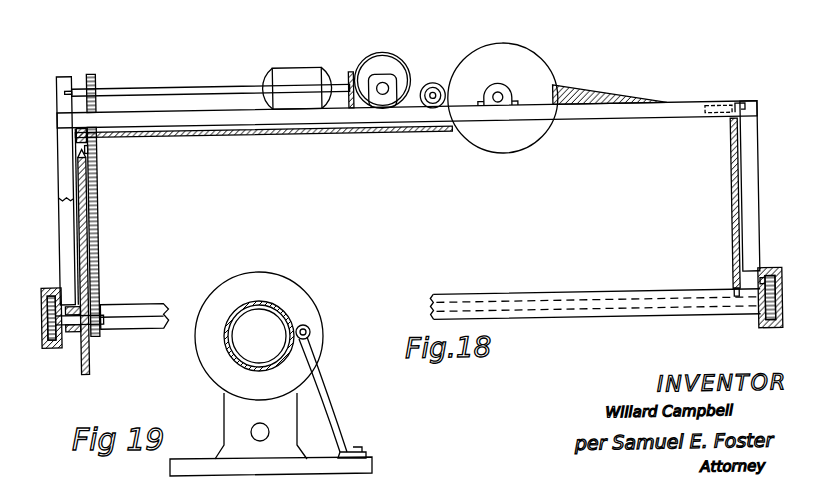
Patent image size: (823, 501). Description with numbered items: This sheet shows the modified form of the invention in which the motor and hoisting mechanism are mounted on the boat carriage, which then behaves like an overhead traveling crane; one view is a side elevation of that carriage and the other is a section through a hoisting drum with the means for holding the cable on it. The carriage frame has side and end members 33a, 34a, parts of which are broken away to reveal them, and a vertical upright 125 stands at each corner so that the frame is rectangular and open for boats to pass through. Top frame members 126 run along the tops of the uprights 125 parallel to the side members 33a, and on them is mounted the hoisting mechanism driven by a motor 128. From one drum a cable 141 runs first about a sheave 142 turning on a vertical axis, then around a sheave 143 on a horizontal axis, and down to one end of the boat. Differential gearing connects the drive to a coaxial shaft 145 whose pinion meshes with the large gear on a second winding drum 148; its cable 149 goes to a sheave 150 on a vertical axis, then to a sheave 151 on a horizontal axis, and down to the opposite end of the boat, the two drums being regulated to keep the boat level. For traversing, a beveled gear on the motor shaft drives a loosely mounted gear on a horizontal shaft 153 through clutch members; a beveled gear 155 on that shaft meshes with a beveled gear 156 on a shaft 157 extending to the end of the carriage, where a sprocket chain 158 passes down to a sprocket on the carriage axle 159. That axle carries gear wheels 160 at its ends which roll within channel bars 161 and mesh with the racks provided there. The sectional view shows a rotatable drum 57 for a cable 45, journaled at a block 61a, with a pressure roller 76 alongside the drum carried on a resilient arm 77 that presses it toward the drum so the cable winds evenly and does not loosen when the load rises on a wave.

In FIG. 18, the vertical upright 125 is at (67, 168).
In FIG. 18, the top frame member 126 is at (610, 118).
In FIG. 18, the motor 128 is at (285, 87).
In FIG. 18, the cable 141 is at (585, 99).
In FIG. 18, the sheave 142 is at (720, 115).
In FIG. 18, the sheave 143 is at (727, 138).
In FIG. 18, the coaxial shaft 145 is at (443, 99).
In FIG. 18, the second winding drum 148 is at (525, 69).
In FIG. 18, the cable 149 is at (325, 137).
In FIG. 18, the sheave 150 is at (75, 141).
In FIG. 18, the sheave 151 is at (88, 151).
In FIG. 18, the horizontal shaft 153 is at (390, 92).
In FIG. 18, the beveled gear 155 is at (395, 64).
In FIG. 18, the beveled gear 156 is at (351, 77).
In FIG. 18, the shaft 157 is at (213, 96).
In FIG. 18, the sprocket chain 158 is at (97, 193).
In FIG. 18, the axle 159 is at (135, 315).
In FIG. 18, the gear wheel 160 is at (47, 292).
In FIG. 18, the channel bar 161 is at (48, 348).
In FIG. 18, the side member 33a is at (528, 306).
In FIG. 18, the end member 34a is at (80, 313).
In FIG. 19, the cable 45 is at (259, 302).
In FIG. 19, the rotatable drum 57 is at (283, 318).
In FIG. 19, the block 61a is at (240, 416).
In FIG. 19, the pressure roller 76 is at (311, 329).
In FIG. 19, the resilient arm 77 is at (318, 393).